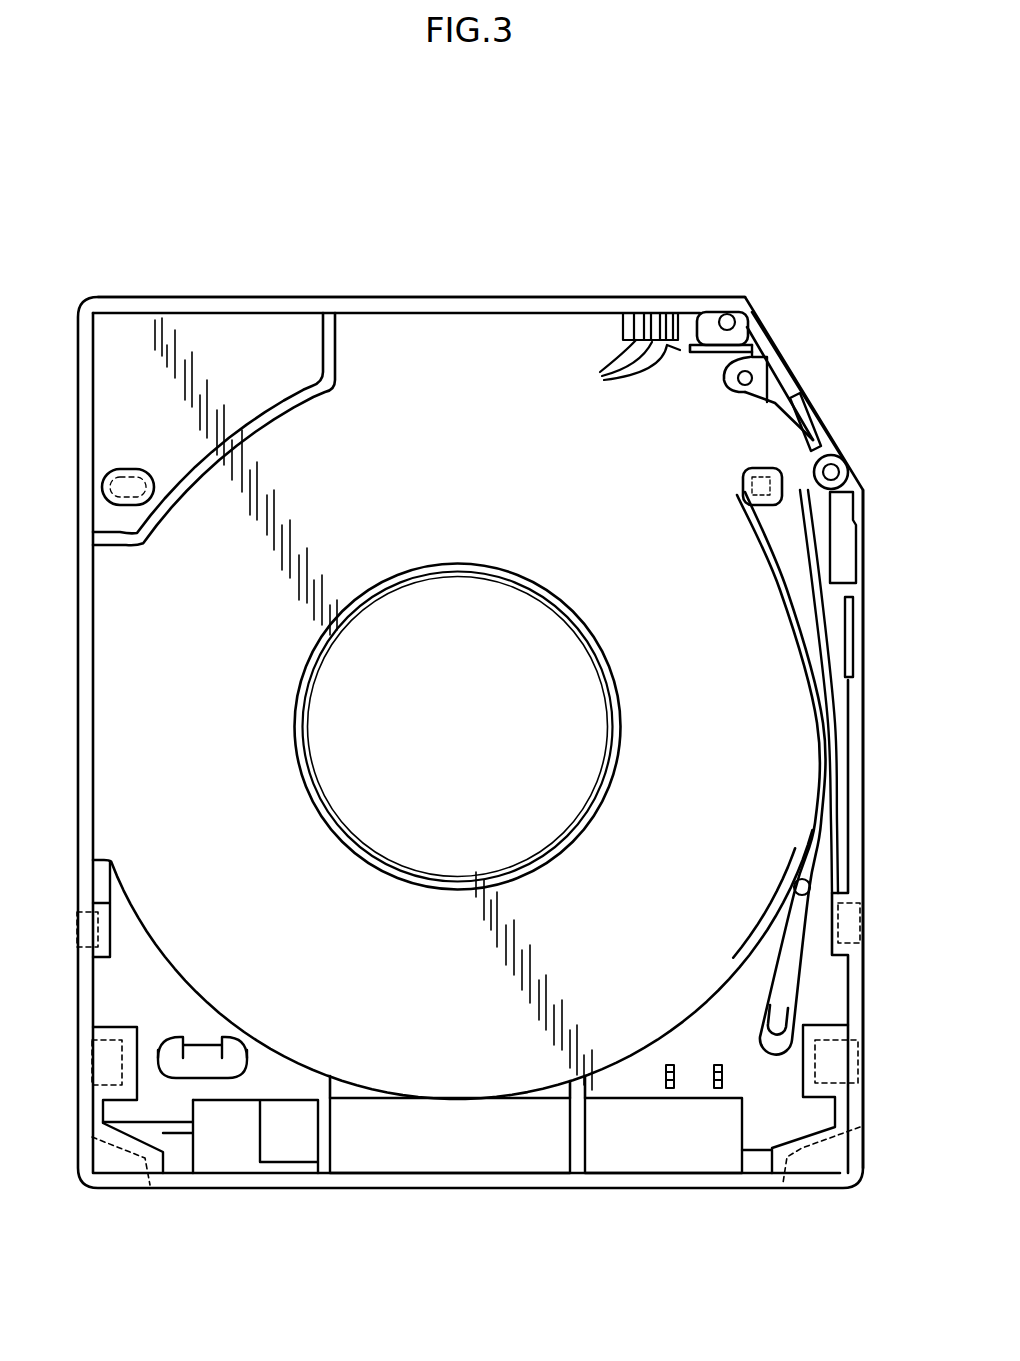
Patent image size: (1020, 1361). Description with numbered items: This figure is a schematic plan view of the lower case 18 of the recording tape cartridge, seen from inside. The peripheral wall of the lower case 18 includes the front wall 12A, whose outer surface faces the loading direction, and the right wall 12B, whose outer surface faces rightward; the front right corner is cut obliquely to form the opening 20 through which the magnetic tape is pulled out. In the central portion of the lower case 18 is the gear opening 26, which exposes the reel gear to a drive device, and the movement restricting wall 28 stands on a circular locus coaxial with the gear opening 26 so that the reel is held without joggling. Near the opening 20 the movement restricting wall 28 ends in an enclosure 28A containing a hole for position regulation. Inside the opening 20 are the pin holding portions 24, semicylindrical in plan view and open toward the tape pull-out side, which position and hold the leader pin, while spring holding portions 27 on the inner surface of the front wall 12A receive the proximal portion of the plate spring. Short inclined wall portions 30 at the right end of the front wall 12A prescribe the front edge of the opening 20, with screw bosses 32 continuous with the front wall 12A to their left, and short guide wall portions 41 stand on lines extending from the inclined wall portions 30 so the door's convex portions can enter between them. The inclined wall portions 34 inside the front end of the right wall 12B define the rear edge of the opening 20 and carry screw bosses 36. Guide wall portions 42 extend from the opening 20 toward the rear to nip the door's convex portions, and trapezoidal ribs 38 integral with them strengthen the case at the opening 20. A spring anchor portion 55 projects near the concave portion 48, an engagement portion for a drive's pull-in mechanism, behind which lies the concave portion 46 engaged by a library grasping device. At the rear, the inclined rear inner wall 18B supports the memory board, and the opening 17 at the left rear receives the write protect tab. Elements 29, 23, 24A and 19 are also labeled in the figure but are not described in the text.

The lower case 18 is at (520, 196).
The front wall 12A is at (395, 297).
The right wall 12B is at (866, 718).
The movement restricting wall 28 is at (192, 488).
The enclosure 28A is at (743, 480).
The positioning boss 29 is at (116, 468).
The gear opening 26 is at (422, 578).
The comb-shaped engaging portion 23 is at (680, 343).
The spring holding portions 27 is at (631, 375).
The inclined wall portions 30 is at (750, 328).
The screw bosses 32 is at (728, 316).
The guide wall portions 41 is at (768, 346).
The opening 20 is at (820, 380).
The ribs 38 is at (822, 410).
The screw bosses 36 is at (840, 470).
The pin holding portions 24 is at (735, 378).
The hook hole 24A is at (748, 388).
The inclined wall portions 34 is at (833, 552).
The guide wall portions 42 is at (778, 972).
The spring anchor portion 55 is at (797, 882).
The concave portion 48 is at (858, 930).
The concave portion 46 is at (92, 1058).
The opening 17 is at (205, 1052).
The rear inner wall 18B is at (640, 1155).
The detection pins 19 is at (716, 1063).